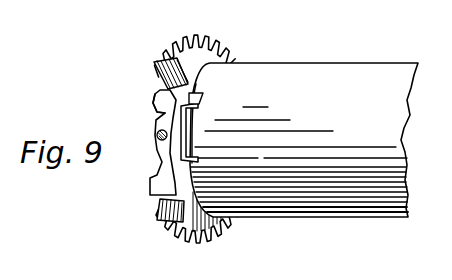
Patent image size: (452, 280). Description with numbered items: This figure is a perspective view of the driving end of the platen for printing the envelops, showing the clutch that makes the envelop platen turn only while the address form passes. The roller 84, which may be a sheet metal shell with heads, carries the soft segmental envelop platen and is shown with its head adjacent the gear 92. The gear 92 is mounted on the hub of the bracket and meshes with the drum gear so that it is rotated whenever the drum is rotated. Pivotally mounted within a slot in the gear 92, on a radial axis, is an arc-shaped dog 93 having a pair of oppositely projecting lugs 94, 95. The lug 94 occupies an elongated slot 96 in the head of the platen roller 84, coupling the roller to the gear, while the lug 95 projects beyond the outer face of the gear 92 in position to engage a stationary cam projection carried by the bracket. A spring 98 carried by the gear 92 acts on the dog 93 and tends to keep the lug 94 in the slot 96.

The roller 84 is at (304, 140).
The gear 92 is at (157, 66).
The arc-shaped dog 93 is at (158, 157).
The lug 94 is at (252, 93).
The lug 95 is at (158, 210).
The elongated slot 96 is at (193, 143).
The spring 98 is at (157, 102).